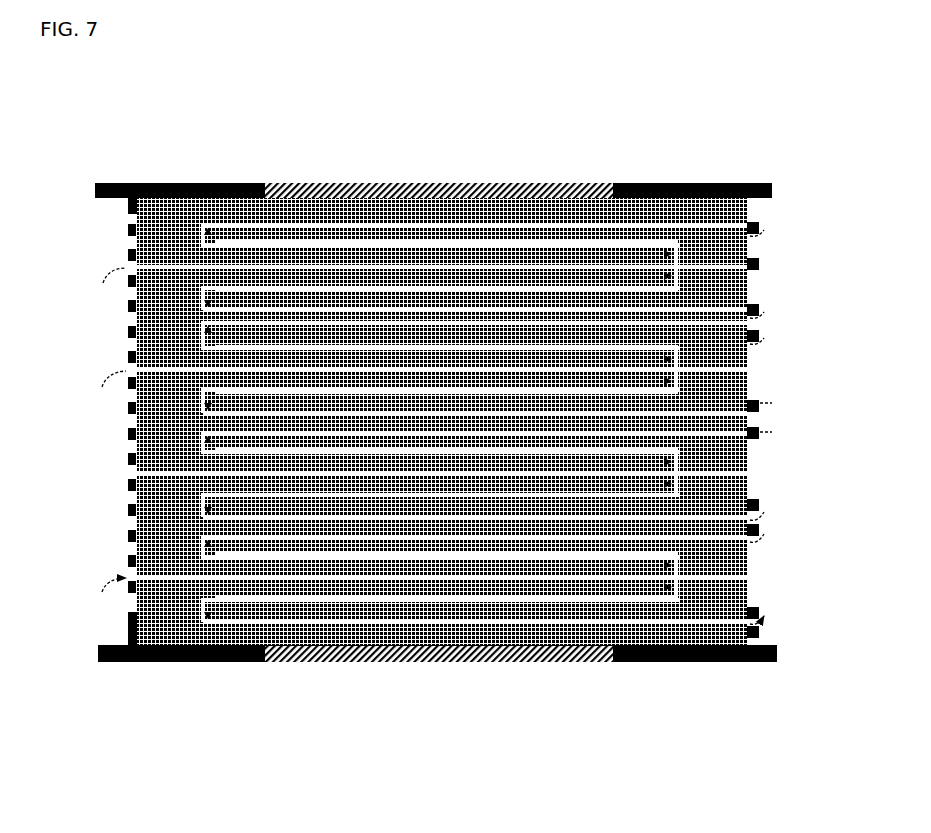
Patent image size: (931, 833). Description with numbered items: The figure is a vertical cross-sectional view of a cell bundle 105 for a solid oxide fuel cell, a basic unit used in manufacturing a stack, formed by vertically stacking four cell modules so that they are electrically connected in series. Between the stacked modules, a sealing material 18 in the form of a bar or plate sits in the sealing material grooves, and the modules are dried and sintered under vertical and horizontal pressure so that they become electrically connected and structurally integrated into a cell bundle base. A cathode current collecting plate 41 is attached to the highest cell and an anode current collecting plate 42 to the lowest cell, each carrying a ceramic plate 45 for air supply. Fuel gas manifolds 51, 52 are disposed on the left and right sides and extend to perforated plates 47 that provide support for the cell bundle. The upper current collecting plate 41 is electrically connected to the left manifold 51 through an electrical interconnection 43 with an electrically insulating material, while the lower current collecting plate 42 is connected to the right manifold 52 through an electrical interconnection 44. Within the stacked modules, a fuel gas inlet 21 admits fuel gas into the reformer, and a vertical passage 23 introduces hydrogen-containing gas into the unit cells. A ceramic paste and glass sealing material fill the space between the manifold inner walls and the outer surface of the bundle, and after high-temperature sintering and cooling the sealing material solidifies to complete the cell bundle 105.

The cell bundle 105 is at (385, 696).
The fuel gas manifold 51 is at (127, 180).
The fuel gas manifold 52 is at (736, 178).
The anode current collecting plate 42 is at (580, 668).
The ceramic plate for air supply 45 is at (356, 180).
The sealing material 18 is at (216, 180).
The cathode current collecting plate 41 is at (301, 180).
The electrical interconnection 43 is at (128, 207).
The perforated plate 47 is at (126, 330).
The fuel gas inlet 21 is at (102, 465).
The vertical passage 23 is at (768, 505).
The electrical interconnection 44 is at (760, 634).